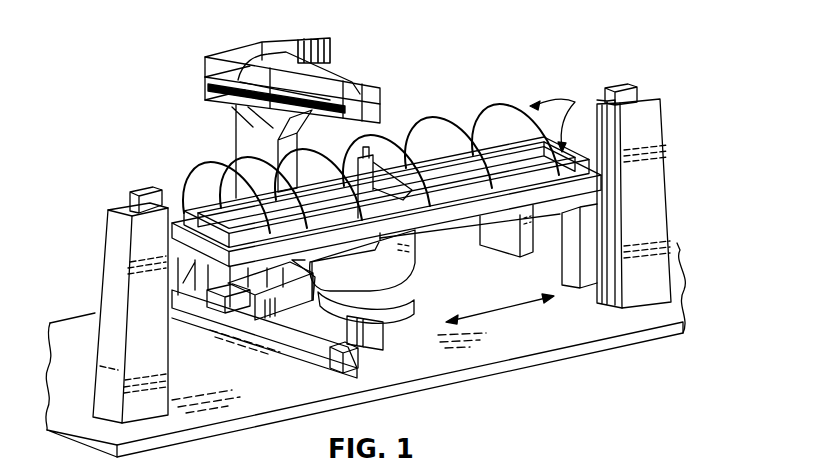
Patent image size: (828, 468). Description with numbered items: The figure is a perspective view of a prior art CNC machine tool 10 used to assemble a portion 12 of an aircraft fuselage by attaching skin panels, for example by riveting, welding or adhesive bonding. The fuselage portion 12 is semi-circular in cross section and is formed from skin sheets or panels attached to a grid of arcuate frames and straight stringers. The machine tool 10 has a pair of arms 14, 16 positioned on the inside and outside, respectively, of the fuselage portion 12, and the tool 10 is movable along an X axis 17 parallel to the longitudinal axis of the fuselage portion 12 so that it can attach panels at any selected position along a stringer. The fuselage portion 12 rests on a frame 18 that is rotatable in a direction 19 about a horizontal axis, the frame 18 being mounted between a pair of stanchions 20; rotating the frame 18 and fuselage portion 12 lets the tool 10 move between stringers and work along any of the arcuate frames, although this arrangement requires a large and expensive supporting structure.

The CNC machine tool 10 is at (352, 75).
The fuselage portion 12 is at (507, 102).
The arm 14 is at (332, 300).
The arm 16 is at (262, 73).
The X axis 17 is at (515, 305).
The frame 18 is at (600, 183).
The direction of rotation 19 is at (555, 119).
The stanchions 20 is at (118, 242).